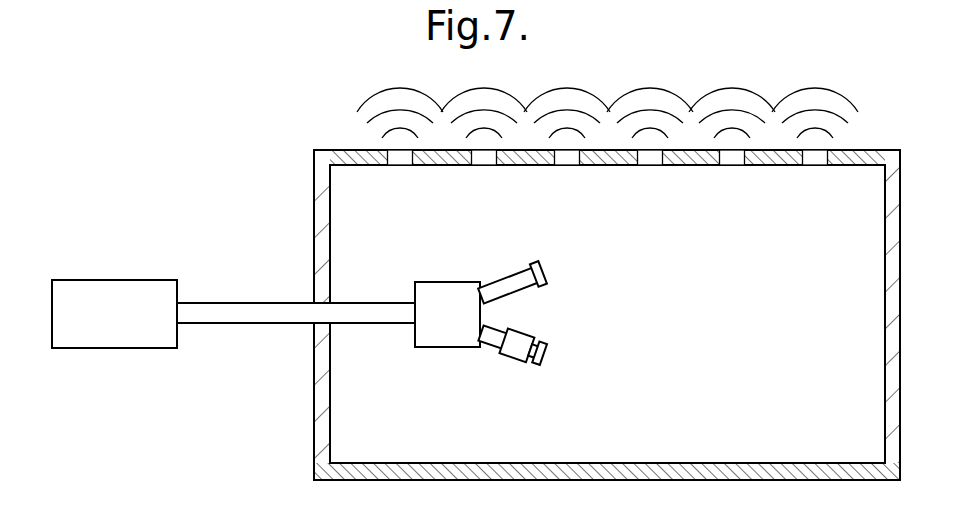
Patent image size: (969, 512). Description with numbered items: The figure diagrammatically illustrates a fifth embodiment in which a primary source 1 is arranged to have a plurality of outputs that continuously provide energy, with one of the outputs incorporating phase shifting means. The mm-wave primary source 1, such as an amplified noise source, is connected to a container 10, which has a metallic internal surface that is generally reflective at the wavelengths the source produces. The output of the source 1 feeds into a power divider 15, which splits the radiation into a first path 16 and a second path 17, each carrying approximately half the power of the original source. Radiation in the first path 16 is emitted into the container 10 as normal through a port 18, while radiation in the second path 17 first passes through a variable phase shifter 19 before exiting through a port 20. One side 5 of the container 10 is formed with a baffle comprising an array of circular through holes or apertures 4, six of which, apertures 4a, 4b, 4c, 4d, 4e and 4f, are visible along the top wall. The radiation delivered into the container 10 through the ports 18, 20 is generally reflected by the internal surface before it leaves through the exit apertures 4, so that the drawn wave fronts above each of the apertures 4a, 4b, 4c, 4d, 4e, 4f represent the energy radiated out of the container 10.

The primary source 1 is at (120, 292).
The apertures 4 is at (392, 124).
The aperture 4a is at (402, 160).
The aperture 4b is at (486, 160).
The aperture 4c is at (569, 160).
The aperture 4d is at (652, 160).
The aperture 4e is at (734, 160).
The aperture 4f is at (817, 160).
The side 5 is at (690, 164).
The container 10 is at (320, 183).
The power divider 15 is at (428, 337).
The first path 16 is at (504, 287).
The second path 17 is at (488, 338).
The port 18 is at (549, 272).
The variable phase shifter 19 is at (514, 338).
The port 20 is at (545, 362).